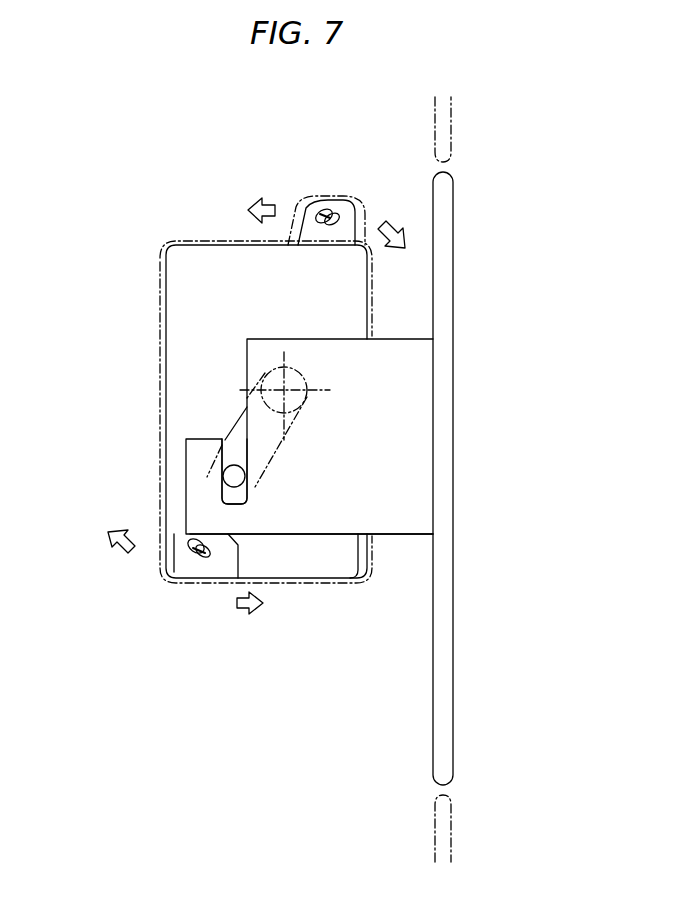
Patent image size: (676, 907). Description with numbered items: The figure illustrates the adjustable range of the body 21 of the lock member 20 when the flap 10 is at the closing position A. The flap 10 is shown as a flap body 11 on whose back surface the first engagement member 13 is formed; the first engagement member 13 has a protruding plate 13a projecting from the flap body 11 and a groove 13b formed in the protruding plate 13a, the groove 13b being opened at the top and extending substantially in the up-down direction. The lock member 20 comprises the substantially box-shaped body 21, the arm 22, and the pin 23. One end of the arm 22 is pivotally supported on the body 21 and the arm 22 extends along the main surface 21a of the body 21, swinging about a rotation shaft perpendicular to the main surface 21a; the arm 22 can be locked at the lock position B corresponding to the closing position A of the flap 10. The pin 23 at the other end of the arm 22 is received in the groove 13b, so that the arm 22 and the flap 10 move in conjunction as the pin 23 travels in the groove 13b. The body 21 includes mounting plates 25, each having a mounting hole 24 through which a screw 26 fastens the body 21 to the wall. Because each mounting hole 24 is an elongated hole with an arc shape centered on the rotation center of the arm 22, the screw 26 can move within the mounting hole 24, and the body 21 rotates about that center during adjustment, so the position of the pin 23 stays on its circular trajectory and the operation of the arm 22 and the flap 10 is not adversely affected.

The flap 10 is at (473, 224).
The flap body 11 is at (454, 437).
The first engagement member 13 is at (352, 514).
The protruding plate 13a is at (273, 522).
The groove 13b is at (222, 446).
The lock member 20 is at (218, 394).
The body 21 is at (213, 262).
The main surface 21a is at (164, 286).
The arm 22 is at (245, 408).
The pin 23 is at (222, 480).
The mounting hole 24 is at (341, 217).
The mounting plate 25 is at (317, 212).
The screw 26 is at (326, 208).
The closing position A is at (470, 632).
The lock position B is at (216, 408).